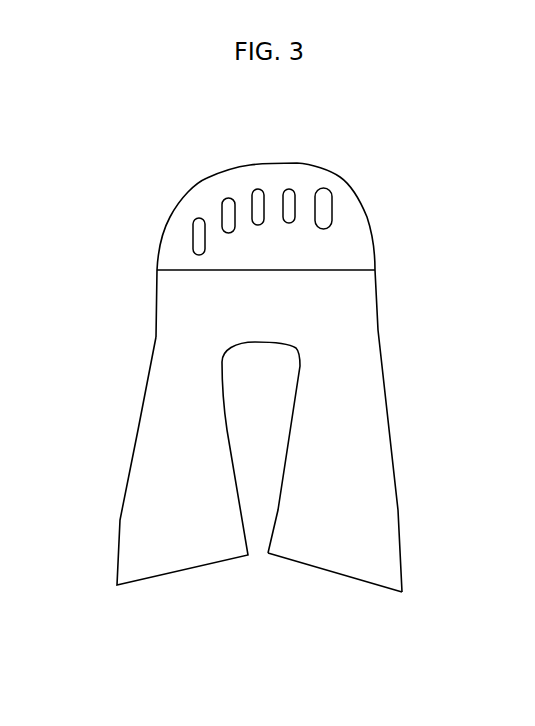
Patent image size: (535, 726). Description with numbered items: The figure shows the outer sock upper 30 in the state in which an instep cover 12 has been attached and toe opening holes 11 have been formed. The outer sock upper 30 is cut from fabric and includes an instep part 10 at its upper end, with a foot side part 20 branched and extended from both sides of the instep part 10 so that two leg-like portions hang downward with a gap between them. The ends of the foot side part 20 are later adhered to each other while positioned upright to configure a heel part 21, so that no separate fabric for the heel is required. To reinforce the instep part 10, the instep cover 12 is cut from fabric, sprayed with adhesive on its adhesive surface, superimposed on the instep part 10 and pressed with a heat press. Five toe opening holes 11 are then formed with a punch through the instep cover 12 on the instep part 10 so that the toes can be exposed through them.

The instep part 10 is at (175, 298).
The toe opening holes 11 is at (322, 197).
The instep cover 12 is at (207, 203).
The foot side part 20 is at (370, 427).
The heel part 21 is at (347, 553).
The outer sock upper 30 is at (377, 165).